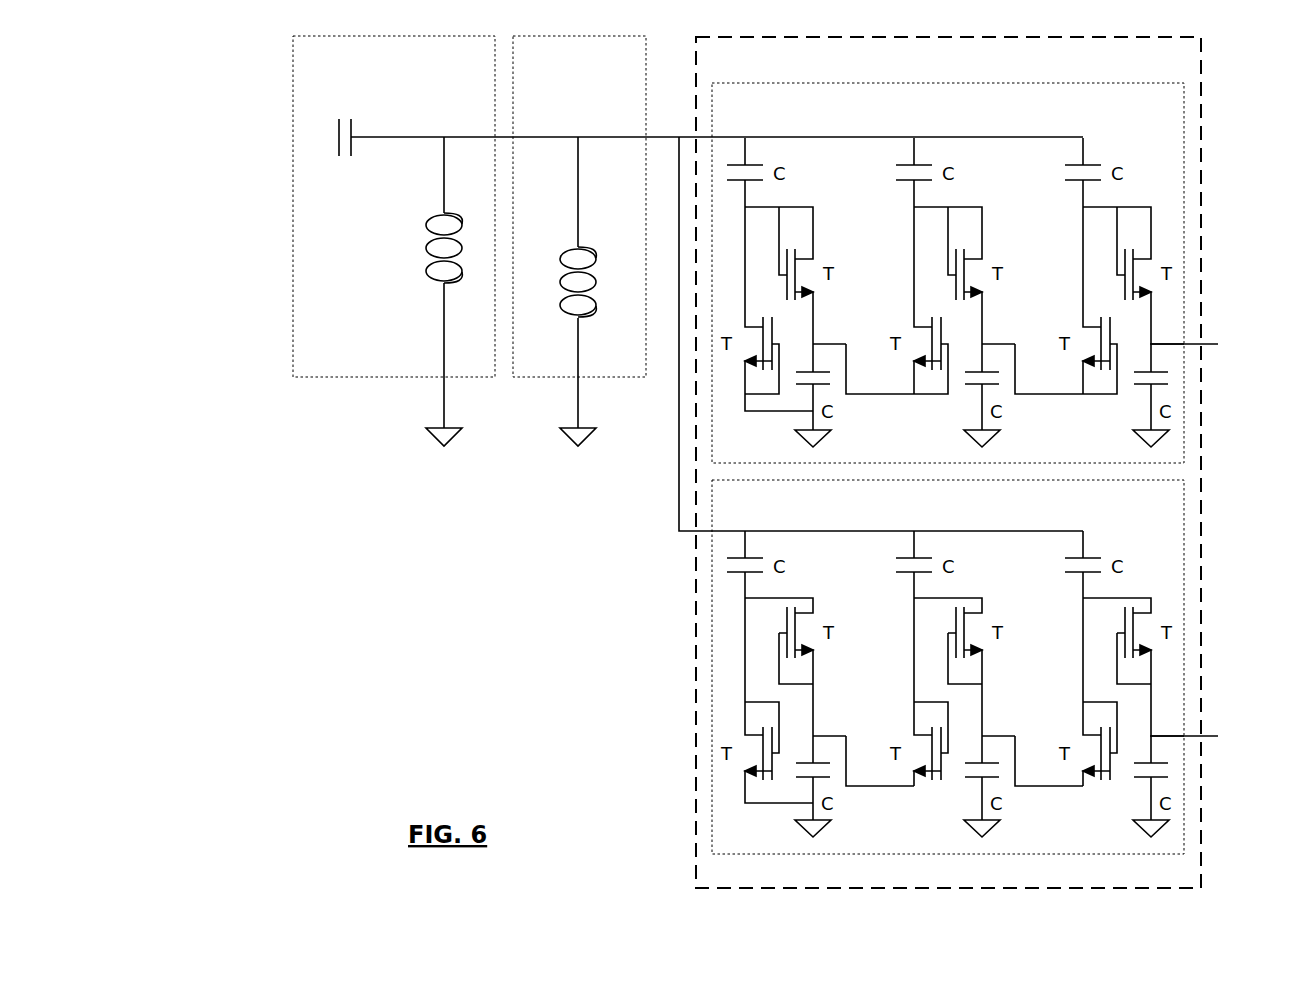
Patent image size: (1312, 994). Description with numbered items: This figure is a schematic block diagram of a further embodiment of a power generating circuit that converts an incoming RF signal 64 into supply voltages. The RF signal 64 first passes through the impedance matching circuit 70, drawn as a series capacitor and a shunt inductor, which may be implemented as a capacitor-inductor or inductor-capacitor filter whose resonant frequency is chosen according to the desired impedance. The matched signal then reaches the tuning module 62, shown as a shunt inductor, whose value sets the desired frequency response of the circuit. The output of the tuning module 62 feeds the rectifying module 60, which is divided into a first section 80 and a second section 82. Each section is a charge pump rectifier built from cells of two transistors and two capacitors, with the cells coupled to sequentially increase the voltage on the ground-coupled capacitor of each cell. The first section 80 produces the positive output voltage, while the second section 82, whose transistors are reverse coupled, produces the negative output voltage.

The RF signal 64 is at (339, 137).
The impedance matching circuit 70 is at (403, 241).
The tuning module 62 is at (596, 241).
The rectifying module 60 is at (987, 462).
The first section 80 is at (948, 273).
The second section 82 is at (948, 667).